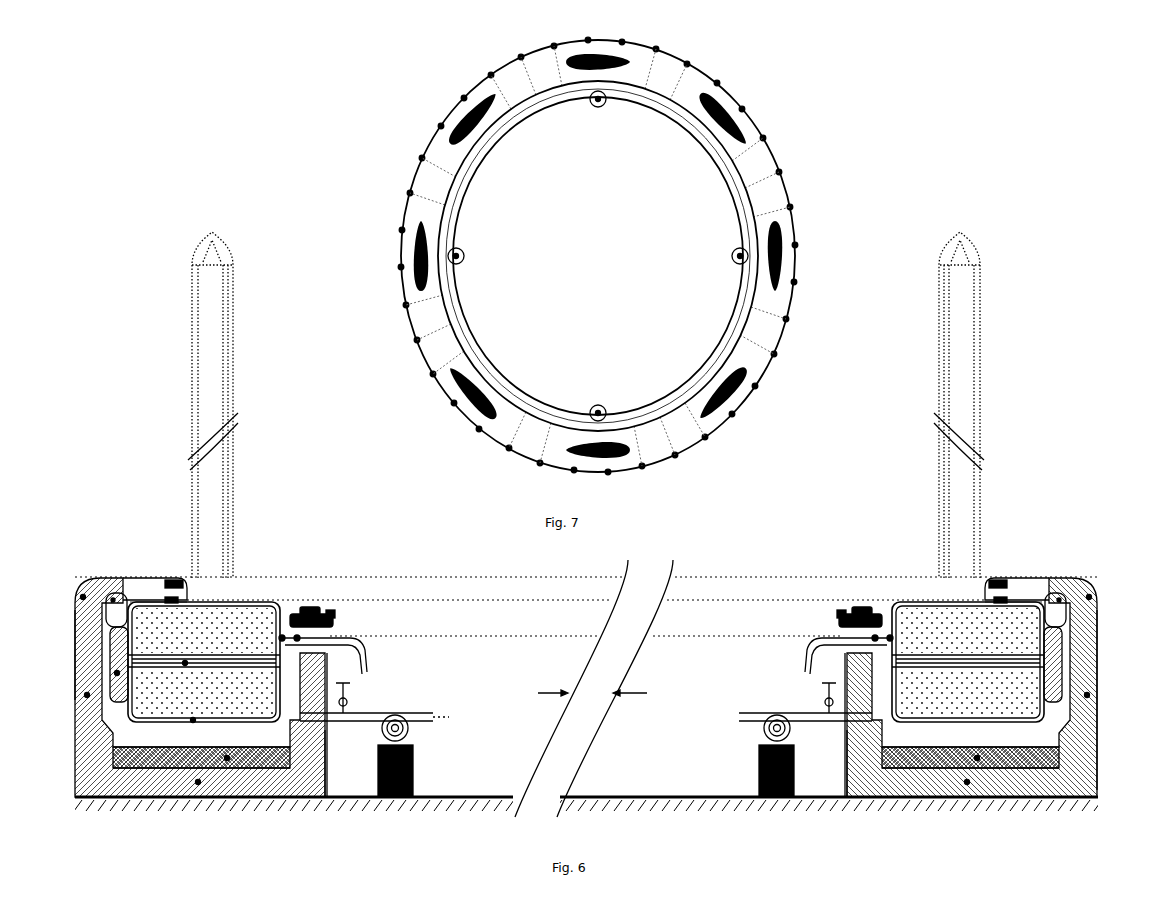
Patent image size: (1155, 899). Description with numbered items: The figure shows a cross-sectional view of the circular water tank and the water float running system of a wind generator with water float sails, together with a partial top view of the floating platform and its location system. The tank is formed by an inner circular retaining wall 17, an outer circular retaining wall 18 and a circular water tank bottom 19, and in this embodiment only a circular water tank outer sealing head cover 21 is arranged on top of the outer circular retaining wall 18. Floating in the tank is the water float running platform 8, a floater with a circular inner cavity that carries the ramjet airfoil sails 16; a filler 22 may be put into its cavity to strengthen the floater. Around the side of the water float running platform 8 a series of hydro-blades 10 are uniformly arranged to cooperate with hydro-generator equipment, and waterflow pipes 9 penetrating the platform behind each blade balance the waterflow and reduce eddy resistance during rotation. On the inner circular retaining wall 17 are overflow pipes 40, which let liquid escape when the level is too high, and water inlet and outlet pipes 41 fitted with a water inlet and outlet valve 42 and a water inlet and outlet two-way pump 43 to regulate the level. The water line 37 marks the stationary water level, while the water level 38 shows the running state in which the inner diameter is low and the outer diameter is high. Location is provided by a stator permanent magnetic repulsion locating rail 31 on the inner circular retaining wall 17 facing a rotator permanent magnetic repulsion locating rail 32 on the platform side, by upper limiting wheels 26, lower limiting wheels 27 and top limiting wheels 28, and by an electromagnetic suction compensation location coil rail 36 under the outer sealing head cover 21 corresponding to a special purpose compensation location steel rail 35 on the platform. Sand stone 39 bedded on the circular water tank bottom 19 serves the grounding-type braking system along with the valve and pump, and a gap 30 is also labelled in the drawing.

In FIG. 7, the water float running platform 8 is at (398, 300).
In FIG. 6, the water float running platform 8 is at (193, 720).
In FIG. 6, the waterflow pipes 9 is at (185, 663).
In FIG. 7, the hydro-blades 10 is at (403, 325).
In FIG. 6, the hydro-blades 10 is at (117, 673).
In FIG. 7, the ramjet airfoil sails 16 is at (575, 60).
In FIG. 6, the ramjet airfoil sails 16 is at (235, 292).
In FIG. 6, the inner circular retaining wall 17 is at (325, 722).
In FIG. 6, the outer circular retaining wall 18 is at (87, 695).
In FIG. 6, the circular water tank bottom 19 is at (198, 782).
In FIG. 6, the circular water tank outer sealing head cover 21 is at (112, 605).
In FIG. 6, the filler 22 is at (1098, 783).
In FIG. 6, the upper limiting wheels 26 is at (337, 612).
In FIG. 6, the lower limiting wheels 27 is at (320, 797).
In FIG. 7, the top limiting wheels 28 is at (606, 106).
In FIG. 6, the top limiting wheels 28 is at (113, 600).
In FIG. 6, the gap 30 is at (586, 592).
In FIG. 7, the stator permanent magnetic repulsion locating rail 31 is at (712, 365).
In FIG. 6, the stator permanent magnetic repulsion locating rail 31 is at (297, 636).
In FIG. 7, the rotator permanent magnetic repulsion locating rail 32 is at (735, 345).
In FIG. 6, the rotator permanent magnetic repulsion locating rail 32 is at (282, 636).
In FIG. 6, the special purpose compensation location steel rail 35 is at (157, 585).
In FIG. 6, the electromagnetic suction compensation location coil rail 36 is at (185, 582).
In FIG. 6, the water line 37 is at (75, 618).
In FIG. 6, the water level 38 is at (83, 597).
In FIG. 6, the sand stone 39 is at (227, 758).
In FIG. 6, the overflow pipes 40 is at (367, 650).
In FIG. 6, the water inlet and outlet pipes 41 is at (423, 713).
In FIG. 6, the water inlet and outlet valve 42 is at (352, 707).
In FIG. 6, the water inlet and outlet two-way pump 43 is at (397, 712).